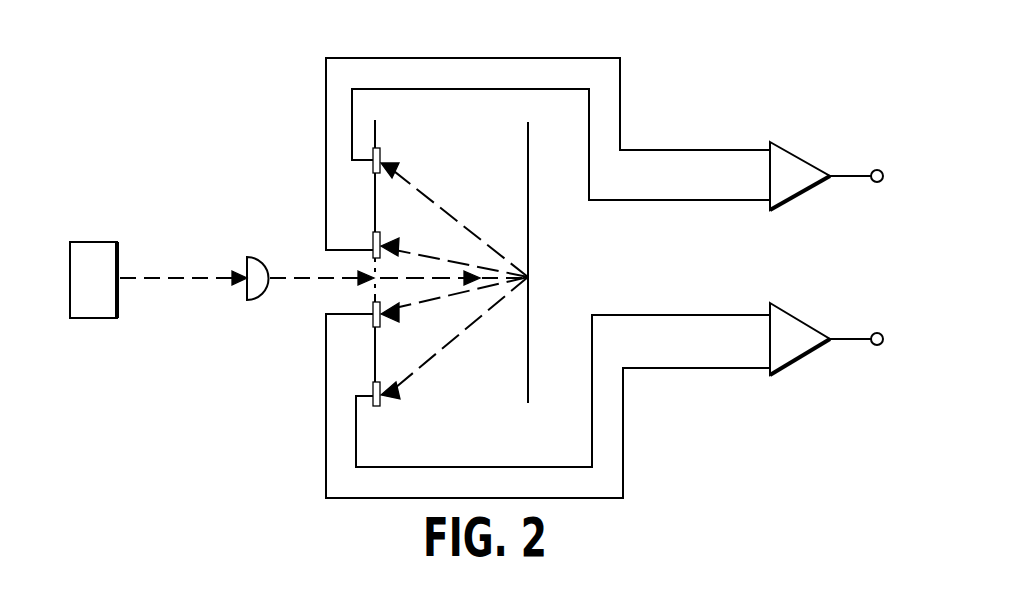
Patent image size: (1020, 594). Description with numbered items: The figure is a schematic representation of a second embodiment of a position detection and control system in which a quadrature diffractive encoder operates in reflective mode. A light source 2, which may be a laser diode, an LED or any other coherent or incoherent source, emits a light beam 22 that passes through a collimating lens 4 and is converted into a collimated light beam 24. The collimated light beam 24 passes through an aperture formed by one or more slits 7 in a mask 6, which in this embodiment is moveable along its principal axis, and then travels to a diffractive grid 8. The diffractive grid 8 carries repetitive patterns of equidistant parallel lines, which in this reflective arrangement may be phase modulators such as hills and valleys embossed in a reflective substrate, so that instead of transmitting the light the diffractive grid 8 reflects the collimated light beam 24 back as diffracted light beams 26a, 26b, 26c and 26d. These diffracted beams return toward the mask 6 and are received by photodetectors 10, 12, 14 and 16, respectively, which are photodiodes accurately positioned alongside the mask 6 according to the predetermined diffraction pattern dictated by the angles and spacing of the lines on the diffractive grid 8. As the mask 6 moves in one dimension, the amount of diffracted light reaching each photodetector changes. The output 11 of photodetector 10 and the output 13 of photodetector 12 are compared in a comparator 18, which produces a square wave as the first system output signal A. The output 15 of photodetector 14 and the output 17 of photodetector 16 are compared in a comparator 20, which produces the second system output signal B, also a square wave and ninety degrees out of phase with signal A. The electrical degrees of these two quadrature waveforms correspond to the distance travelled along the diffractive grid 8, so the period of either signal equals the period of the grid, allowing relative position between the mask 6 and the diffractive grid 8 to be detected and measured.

The light source 2 is at (100, 242).
The light beam 22 is at (160, 277).
The collimating lens 4 is at (253, 257).
The collimated light beam 24 is at (318, 262).
The mask 6 is at (377, 130).
The slit 7 is at (350, 286).
The diffractive grid 8 is at (526, 140).
The photodetector 10 is at (381, 160).
The photodetector 12 is at (377, 233).
The photodetector 14 is at (378, 328).
The photodetector 16 is at (378, 406).
The diffracted light beam 26a is at (441, 205).
The diffracted light beam 26b is at (458, 248).
The diffracted light beam 26c is at (452, 305).
The diffracted light beam 26d is at (440, 352).
The output 11 is at (654, 201).
The output 13 is at (689, 150).
The output 15 is at (731, 371).
The output 17 is at (679, 314).
The comparator 18 is at (797, 152).
The comparator 20 is at (795, 365).
The first system output signal A is at (880, 169).
The second system output signal B is at (876, 345).